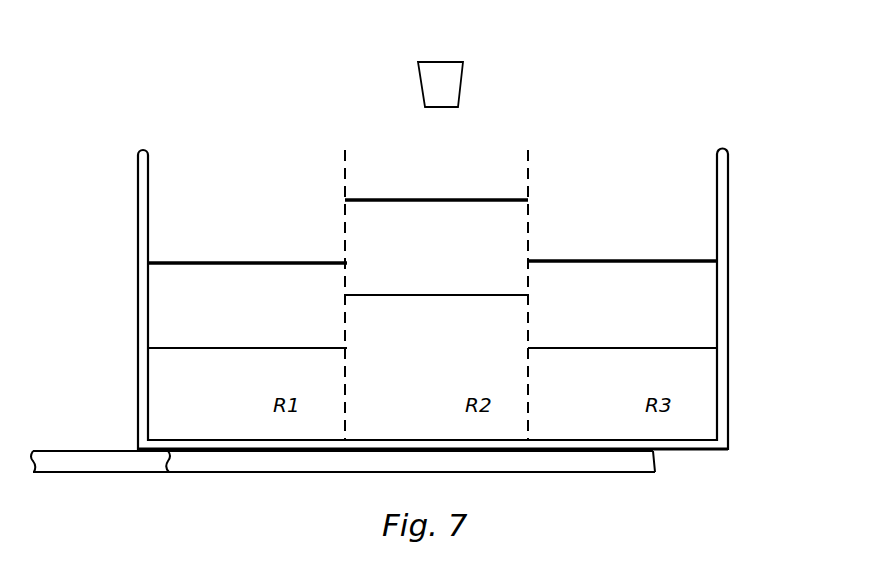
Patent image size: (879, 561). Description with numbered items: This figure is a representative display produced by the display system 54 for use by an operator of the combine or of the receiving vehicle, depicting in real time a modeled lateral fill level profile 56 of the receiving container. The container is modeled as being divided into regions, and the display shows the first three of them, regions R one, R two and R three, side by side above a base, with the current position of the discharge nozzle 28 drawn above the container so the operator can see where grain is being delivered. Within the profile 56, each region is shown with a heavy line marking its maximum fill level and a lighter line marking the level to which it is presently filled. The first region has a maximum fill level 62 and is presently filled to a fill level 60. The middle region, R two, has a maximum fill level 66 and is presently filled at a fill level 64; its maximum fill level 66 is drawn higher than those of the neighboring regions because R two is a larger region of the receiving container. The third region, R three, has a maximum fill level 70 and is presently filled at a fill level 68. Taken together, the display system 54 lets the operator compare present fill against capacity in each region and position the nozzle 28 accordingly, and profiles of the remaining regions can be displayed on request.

The discharge nozzle 28 is at (460, 82).
The display system 54 is at (636, 100).
The modeled lateral fill level profile 56 is at (220, 130).
The fill level 60 is at (197, 346).
The maximum fill level 62 is at (195, 261).
The fill level 64 is at (383, 292).
The maximum fill level 66 is at (380, 197).
The fill level 68 is at (573, 346).
The maximum fill level 70 is at (683, 258).